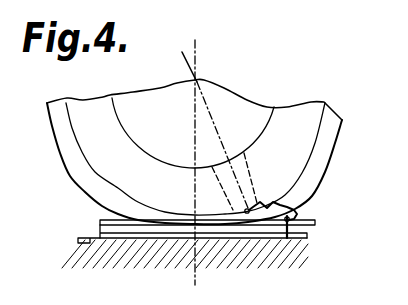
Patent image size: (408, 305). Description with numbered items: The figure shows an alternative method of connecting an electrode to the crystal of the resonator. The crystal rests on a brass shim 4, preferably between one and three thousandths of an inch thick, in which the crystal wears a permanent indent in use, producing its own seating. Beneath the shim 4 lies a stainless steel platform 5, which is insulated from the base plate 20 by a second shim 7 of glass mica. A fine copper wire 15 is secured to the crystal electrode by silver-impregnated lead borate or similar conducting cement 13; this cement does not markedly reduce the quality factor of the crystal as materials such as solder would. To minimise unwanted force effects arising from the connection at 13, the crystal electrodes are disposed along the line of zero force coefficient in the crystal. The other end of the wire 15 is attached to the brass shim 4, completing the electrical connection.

The shim 4 is at (100, 220).
The platform 5 is at (100, 234).
The second shim 7 is at (83, 245).
The conducting cement 13 is at (249, 207).
The fine copper wire 15 is at (250, 218).
The base plate 20 is at (263, 252).